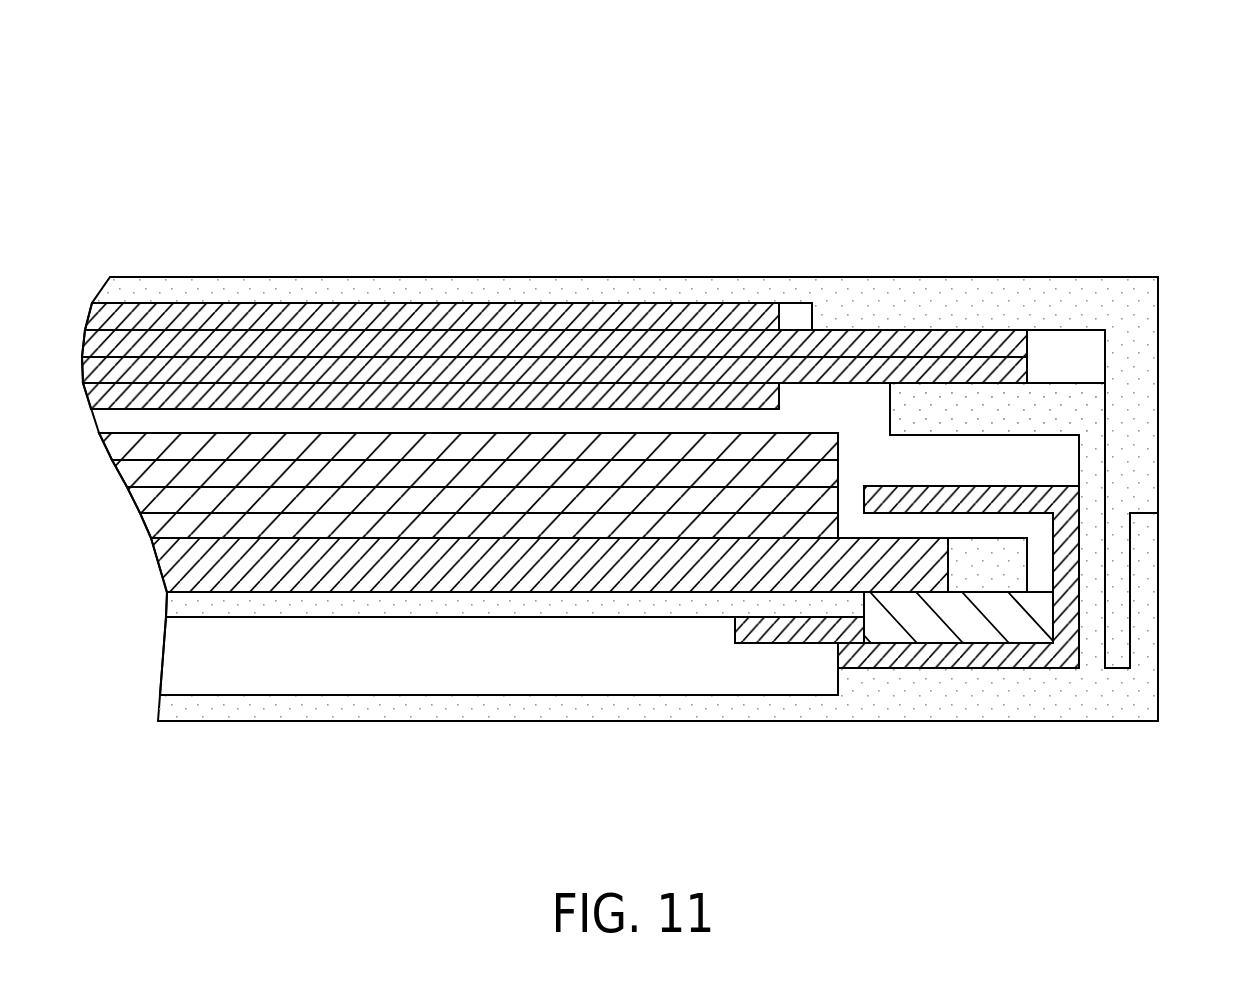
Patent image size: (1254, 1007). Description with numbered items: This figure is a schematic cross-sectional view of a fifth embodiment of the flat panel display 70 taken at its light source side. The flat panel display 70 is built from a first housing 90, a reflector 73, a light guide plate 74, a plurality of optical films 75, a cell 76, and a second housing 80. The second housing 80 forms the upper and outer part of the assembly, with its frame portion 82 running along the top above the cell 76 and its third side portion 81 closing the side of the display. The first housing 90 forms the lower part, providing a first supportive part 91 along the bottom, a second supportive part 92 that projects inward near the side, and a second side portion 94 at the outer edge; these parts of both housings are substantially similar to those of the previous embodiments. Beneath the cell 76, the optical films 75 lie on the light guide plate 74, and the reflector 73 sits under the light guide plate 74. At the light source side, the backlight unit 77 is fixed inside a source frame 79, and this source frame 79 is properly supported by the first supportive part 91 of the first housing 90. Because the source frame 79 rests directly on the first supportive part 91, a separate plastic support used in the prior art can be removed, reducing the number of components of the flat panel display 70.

The flat panel display 70 is at (1148, 135).
The second housing 80 is at (703, 265).
The cell 76 is at (557, 370).
The frame portion 82 is at (965, 320).
The second supportive part 92 is at (1075, 412).
The third side portion 81 is at (1143, 460).
The second side portion 94 is at (1150, 562).
The optical films 75 is at (462, 522).
The light guide plate 74 is at (575, 568).
The reflector 73 is at (667, 595).
The first housing 90 is at (732, 735).
The first supportive part 91 is at (853, 697).
The backlight unit 77 is at (917, 630).
The source frame 79 is at (995, 653).